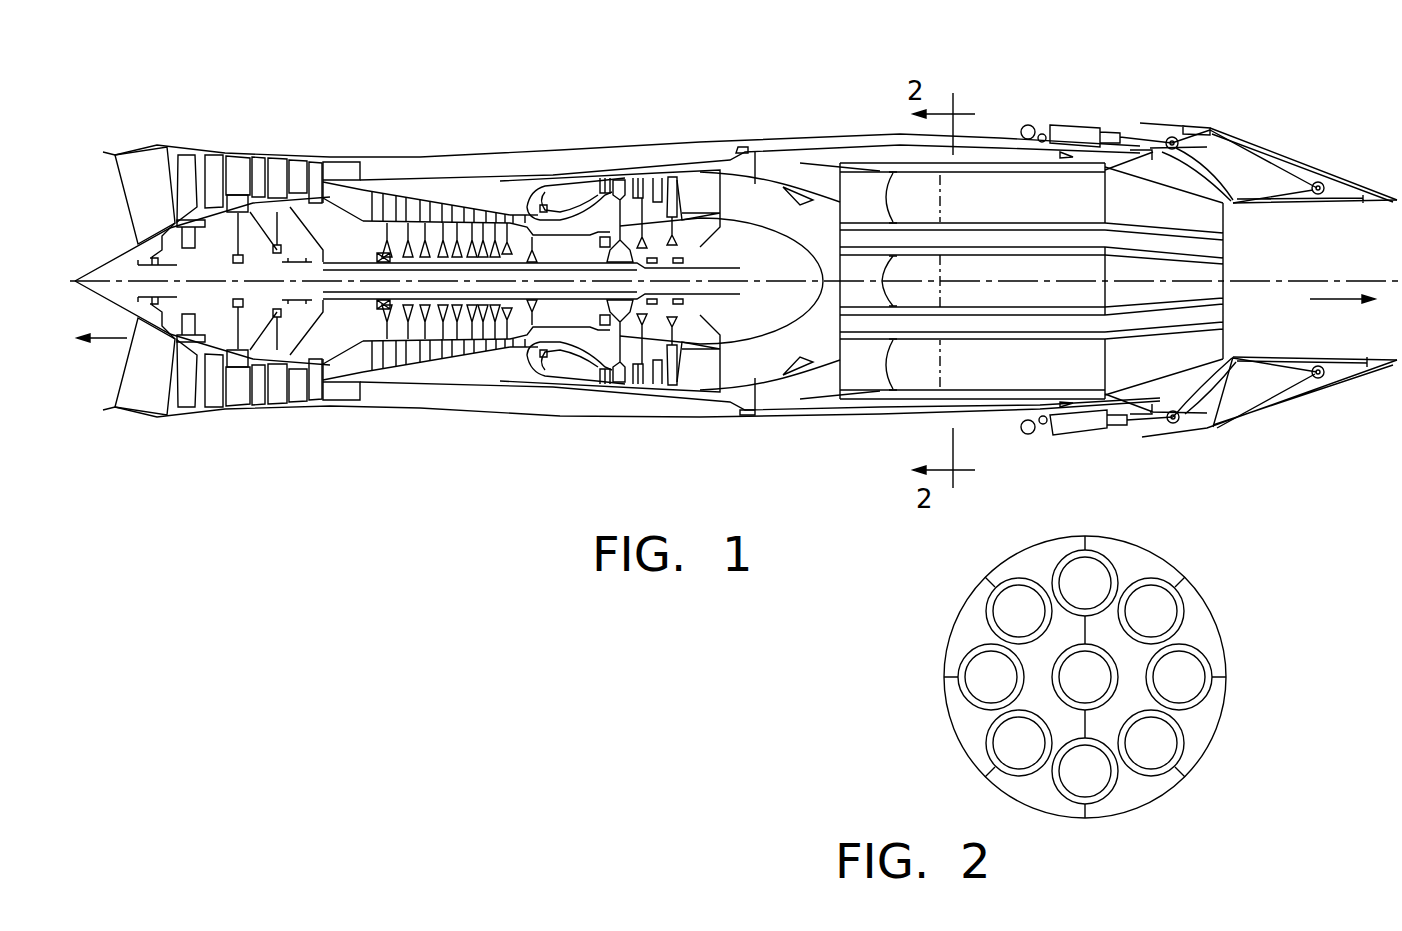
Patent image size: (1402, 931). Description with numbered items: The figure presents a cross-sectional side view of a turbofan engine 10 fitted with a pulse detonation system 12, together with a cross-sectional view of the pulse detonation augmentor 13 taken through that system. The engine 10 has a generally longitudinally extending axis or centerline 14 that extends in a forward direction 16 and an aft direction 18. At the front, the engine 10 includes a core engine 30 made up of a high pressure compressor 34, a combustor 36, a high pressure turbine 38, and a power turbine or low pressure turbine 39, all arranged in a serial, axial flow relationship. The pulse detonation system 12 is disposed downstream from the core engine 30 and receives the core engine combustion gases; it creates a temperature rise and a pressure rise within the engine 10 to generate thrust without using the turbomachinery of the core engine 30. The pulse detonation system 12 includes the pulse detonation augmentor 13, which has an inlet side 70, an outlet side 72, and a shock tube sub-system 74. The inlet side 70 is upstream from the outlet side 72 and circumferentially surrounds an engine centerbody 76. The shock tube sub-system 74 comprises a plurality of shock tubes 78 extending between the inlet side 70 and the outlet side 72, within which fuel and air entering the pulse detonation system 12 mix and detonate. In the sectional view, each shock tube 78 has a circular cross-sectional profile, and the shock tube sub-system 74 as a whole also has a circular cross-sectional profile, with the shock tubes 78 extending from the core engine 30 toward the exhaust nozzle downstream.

In FIG. 1, the turbofan engine 10 is at (205, 90).
In FIG. 1, the pulse detonation system 12 is at (982, 82).
In FIG. 1, the pulse detonation augmentor 13 is at (975, 185).
In FIG. 2, the pulse detonation augmentor 13 is at (950, 626).
In FIG. 1, the centerline 14 is at (127, 266).
In FIG. 1, the forward direction 16 is at (127, 338).
In FIG. 1, the aft direction 18 is at (1328, 300).
In FIG. 1, the core engine 30 is at (457, 440).
In FIG. 1, the high pressure compressor 34 is at (444, 194).
In FIG. 1, the combustor 36 is at (553, 200).
In FIG. 1, the high pressure turbine 38 is at (614, 176).
In FIG. 1, the low pressure turbine 39 is at (660, 168).
In FIG. 1, the inlet side 70 is at (812, 380).
In FIG. 1, the outlet side 72 is at (1227, 270).
In FIG. 1, the shock tube sub-system 74 is at (923, 408).
In FIG. 2, the shock tube sub-system 74 is at (926, 754).
In FIG. 1, the engine centerbody 76 is at (755, 415).
In FIG. 2, the shock tubes 78 is at (1098, 562).